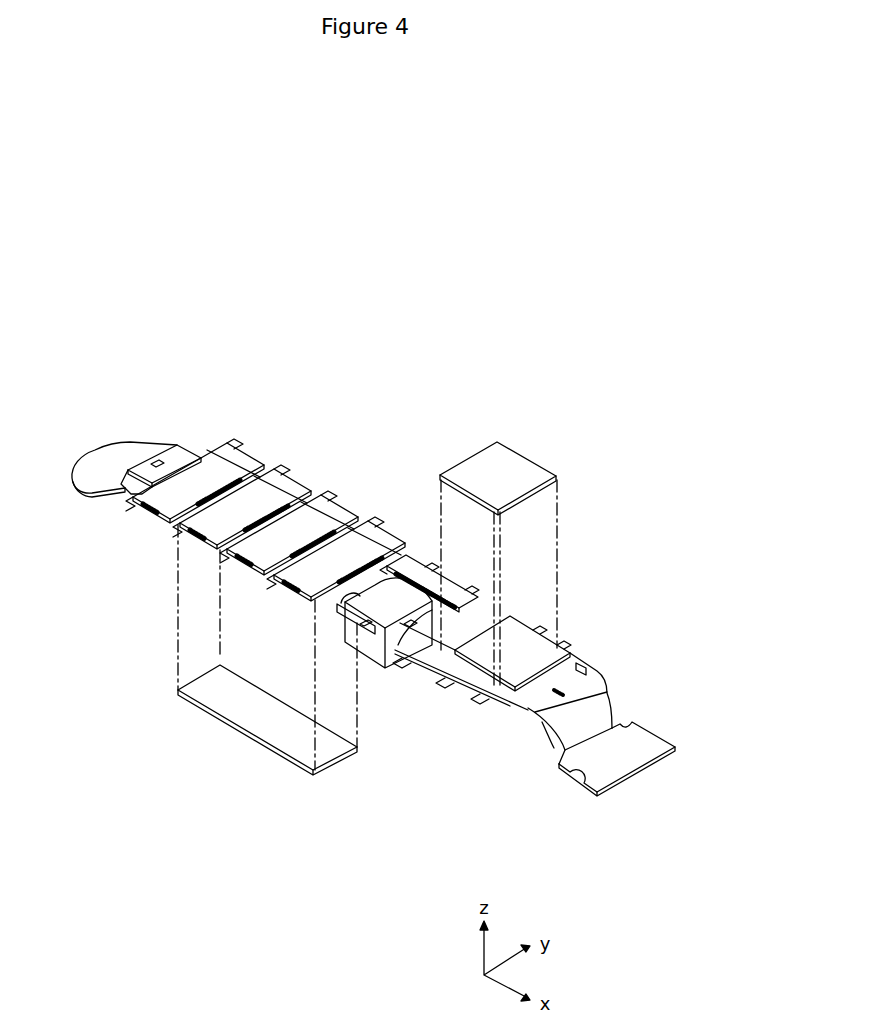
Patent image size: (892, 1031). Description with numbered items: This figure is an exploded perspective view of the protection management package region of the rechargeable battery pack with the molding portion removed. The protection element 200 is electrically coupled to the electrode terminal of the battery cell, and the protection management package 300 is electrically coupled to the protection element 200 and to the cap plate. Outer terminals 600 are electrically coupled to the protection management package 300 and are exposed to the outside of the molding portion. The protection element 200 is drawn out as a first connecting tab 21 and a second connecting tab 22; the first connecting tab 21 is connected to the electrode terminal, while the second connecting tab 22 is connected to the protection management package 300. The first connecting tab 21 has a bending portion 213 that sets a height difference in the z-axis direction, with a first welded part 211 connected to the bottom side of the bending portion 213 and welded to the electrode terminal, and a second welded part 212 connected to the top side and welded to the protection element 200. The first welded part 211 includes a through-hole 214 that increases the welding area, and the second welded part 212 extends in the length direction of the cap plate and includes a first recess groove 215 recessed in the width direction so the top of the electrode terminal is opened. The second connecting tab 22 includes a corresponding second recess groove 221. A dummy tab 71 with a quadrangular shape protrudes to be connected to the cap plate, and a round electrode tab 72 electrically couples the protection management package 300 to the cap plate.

The electrode tab 72 is at (120, 445).
The outer terminals 600 is at (348, 536).
The protection management package 300 is at (237, 717).
The protection element 200 is at (498, 452).
The first connecting tab 21 is at (421, 683).
The first welded part 211 is at (402, 664).
The second welded part 212 is at (452, 686).
The bending portion 213 is at (362, 656).
The through-hole 214 is at (413, 621).
The first recess groove 215 is at (347, 651).
The second recess groove 221 is at (393, 548).
The second connecting tab 22 is at (487, 620).
The dummy tab 71 is at (638, 743).